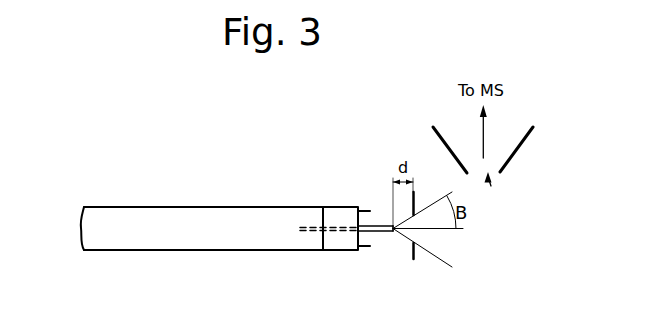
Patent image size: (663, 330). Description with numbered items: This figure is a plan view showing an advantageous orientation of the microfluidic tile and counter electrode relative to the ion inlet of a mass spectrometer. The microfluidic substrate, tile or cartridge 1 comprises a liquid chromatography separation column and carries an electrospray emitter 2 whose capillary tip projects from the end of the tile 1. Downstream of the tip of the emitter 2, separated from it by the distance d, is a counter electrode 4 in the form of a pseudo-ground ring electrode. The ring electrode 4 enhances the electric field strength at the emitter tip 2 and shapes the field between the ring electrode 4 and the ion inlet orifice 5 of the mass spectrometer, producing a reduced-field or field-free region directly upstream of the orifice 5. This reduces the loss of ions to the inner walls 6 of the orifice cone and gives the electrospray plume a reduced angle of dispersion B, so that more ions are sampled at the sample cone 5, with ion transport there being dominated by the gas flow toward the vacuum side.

The microfluidic tile 1 is at (178, 221).
The electrospray emitter 2 is at (383, 233).
The counter electrode 4 is at (414, 259).
The ion inlet orifice 5 is at (491, 186).
The inner walls of the cone 6 is at (446, 143).